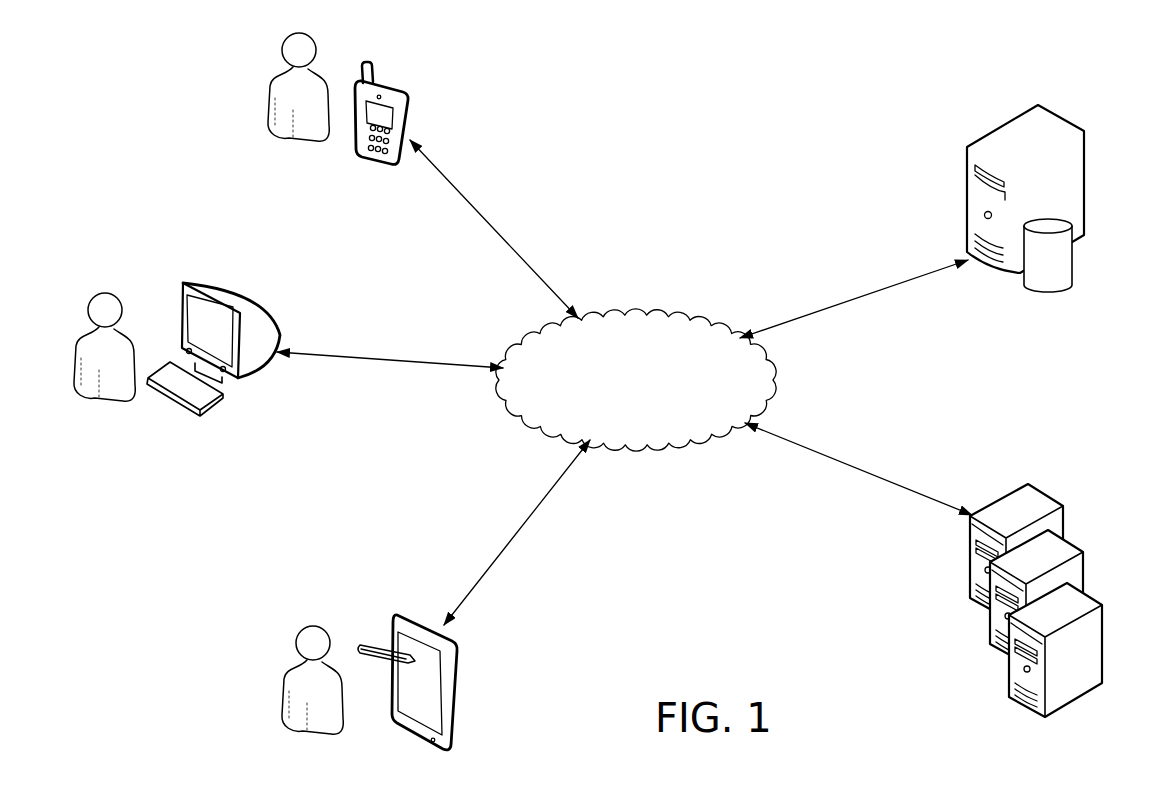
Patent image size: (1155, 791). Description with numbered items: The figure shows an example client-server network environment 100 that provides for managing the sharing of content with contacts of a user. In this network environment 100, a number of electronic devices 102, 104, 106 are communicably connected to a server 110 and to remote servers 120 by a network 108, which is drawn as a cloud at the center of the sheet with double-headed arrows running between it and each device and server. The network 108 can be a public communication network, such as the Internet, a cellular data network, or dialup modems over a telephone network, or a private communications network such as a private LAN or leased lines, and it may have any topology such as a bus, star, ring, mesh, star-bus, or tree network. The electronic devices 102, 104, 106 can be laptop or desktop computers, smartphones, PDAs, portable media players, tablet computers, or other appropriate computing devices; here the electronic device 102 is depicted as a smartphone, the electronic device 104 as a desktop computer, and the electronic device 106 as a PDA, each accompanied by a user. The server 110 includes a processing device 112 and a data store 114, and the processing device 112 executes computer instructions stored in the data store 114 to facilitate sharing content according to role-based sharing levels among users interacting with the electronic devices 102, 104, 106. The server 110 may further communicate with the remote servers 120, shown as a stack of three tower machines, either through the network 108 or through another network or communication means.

The network environment 100 is at (747, 75).
The electronic device 102 is at (393, 88).
The electronic device 104 is at (250, 291).
The electronic device 106 is at (400, 615).
The network 108 is at (636, 313).
The server 110 is at (969, 291).
The processing device 112 is at (1060, 122).
The data store 114 is at (1072, 273).
The remote servers 120 is at (965, 684).